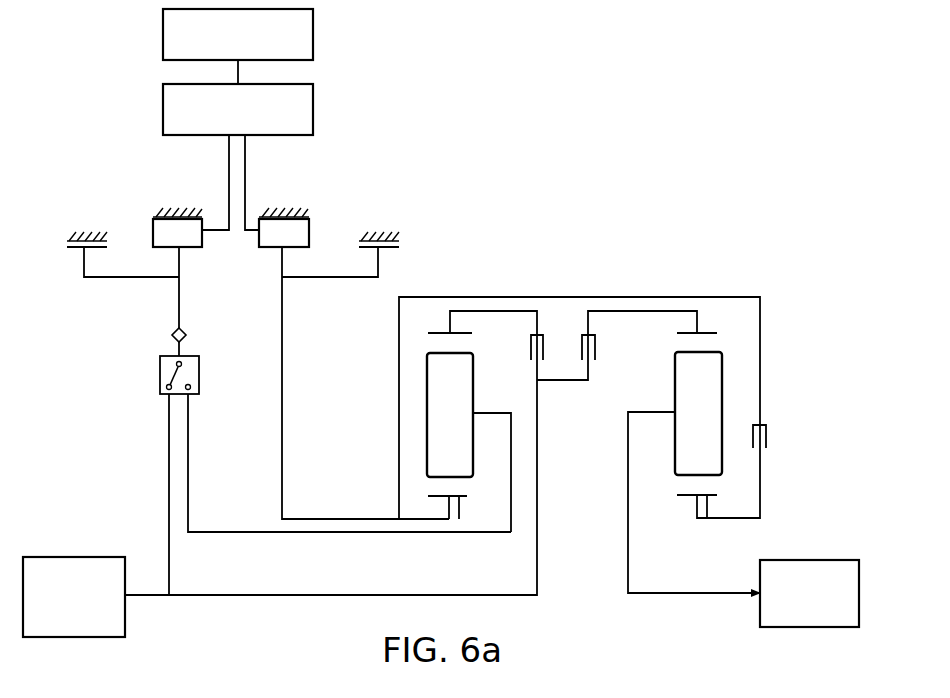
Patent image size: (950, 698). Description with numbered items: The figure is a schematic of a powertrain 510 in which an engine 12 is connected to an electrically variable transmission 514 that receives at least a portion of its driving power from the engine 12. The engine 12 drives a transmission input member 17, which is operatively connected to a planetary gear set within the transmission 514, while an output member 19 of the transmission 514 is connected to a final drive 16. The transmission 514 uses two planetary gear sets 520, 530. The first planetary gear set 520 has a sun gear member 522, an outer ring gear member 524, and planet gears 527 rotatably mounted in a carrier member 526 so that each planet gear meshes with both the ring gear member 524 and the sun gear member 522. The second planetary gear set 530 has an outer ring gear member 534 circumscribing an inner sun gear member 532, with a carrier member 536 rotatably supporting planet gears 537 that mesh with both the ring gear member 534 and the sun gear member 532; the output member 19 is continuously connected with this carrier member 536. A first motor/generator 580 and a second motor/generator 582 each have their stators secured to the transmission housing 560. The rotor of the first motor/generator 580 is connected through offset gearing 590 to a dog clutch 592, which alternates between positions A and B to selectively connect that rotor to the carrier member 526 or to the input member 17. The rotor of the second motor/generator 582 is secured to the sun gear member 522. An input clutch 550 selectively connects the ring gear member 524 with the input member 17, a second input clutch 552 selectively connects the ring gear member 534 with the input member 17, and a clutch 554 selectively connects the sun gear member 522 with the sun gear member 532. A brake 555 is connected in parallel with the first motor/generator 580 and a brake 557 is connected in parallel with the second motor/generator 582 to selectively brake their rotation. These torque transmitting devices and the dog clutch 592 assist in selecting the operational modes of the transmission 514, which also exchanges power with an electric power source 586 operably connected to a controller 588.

The engine 12 is at (92, 540).
The final drive 16 is at (793, 545).
The transmission input member 17 is at (155, 598).
The transmission output member 19 is at (720, 597).
The powertrain 510 is at (683, 122).
The electrically variable transmission 514 is at (727, 148).
The planetary gear set 520 is at (439, 500).
The sun gear member 522 is at (459, 499).
The ring gear member 524 is at (440, 332).
The carrier member 526 is at (483, 413).
The planet gears 527 is at (450, 415).
The planetary gear set 530 is at (682, 500).
The sun gear member 532 is at (707, 499).
The ring gear member 534 is at (690, 332).
The carrier member 536 is at (662, 408).
The planet gears 537 is at (698, 413).
The input clutch 550 is at (548, 330).
The input clutch 552 is at (598, 330).
The clutch 554 is at (772, 425).
The brake 555 is at (60, 240).
The brake 557 is at (410, 240).
The transmission housing 560 is at (154, 212).
The first motor/generator 580 is at (150, 214).
The second motor/generator 582 is at (318, 214).
The electric power source 586 is at (163, 36).
The controller 588 is at (163, 108).
The offset gearing 590 is at (166, 335).
The dog clutch 592 is at (160, 381).